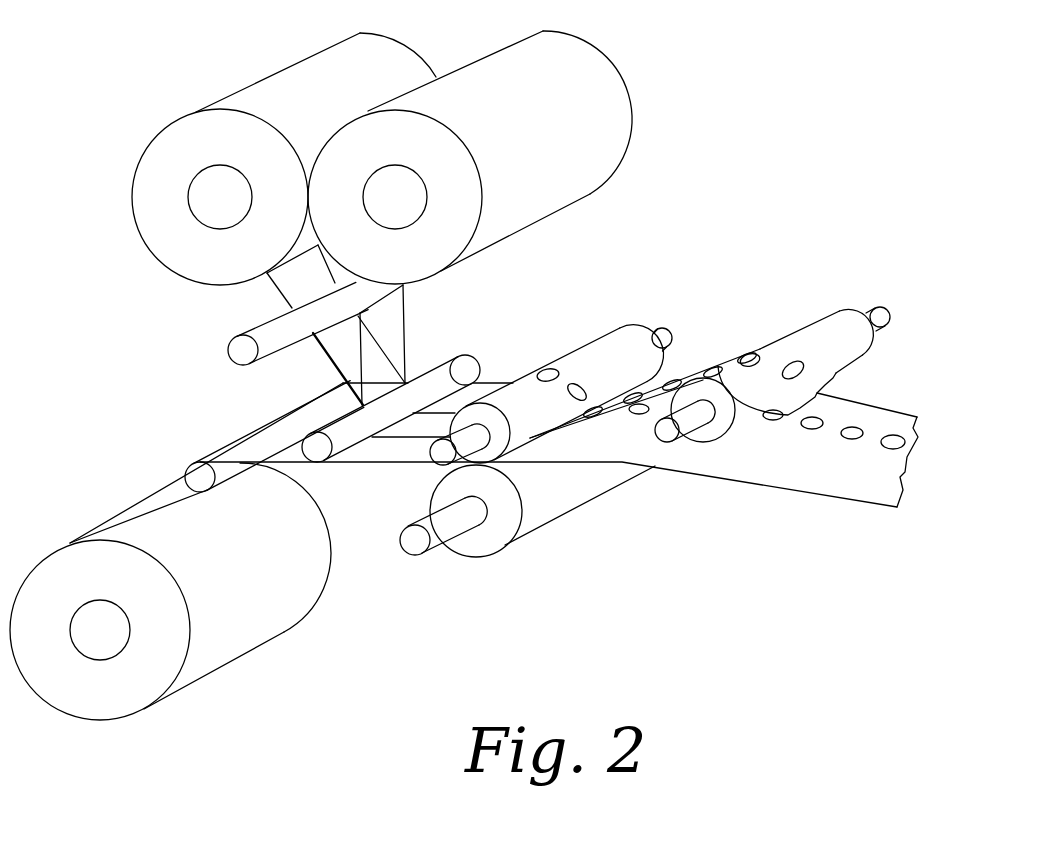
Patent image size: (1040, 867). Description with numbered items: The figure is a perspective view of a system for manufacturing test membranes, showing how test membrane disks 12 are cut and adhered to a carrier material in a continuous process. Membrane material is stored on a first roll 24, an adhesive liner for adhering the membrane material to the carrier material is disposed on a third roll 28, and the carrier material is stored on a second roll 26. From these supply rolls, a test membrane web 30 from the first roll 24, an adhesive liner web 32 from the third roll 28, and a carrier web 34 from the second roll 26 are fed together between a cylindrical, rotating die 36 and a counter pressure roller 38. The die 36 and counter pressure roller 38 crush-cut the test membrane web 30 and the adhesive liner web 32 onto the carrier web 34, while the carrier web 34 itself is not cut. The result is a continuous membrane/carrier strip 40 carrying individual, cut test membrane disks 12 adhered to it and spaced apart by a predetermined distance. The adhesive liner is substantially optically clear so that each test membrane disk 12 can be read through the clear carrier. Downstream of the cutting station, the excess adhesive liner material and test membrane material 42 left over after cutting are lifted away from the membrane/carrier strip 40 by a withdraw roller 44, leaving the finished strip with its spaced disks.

The test membrane disk 12 is at (768, 417).
The first roll 24 is at (407, 207).
The second roll 26 is at (104, 642).
The third roll 28 is at (198, 193).
The test membrane web 30 is at (393, 310).
The adhesive liner web 32 is at (338, 349).
The carrier web 34 is at (137, 498).
The cylindrical rotating die 36 is at (626, 345).
The counter pressure roller 38 is at (481, 548).
The membrane/carrier strip 40 is at (946, 440).
The excess adhesive liner material and test membrane material 42 is at (827, 385).
The withdraw roller 44 is at (843, 318).